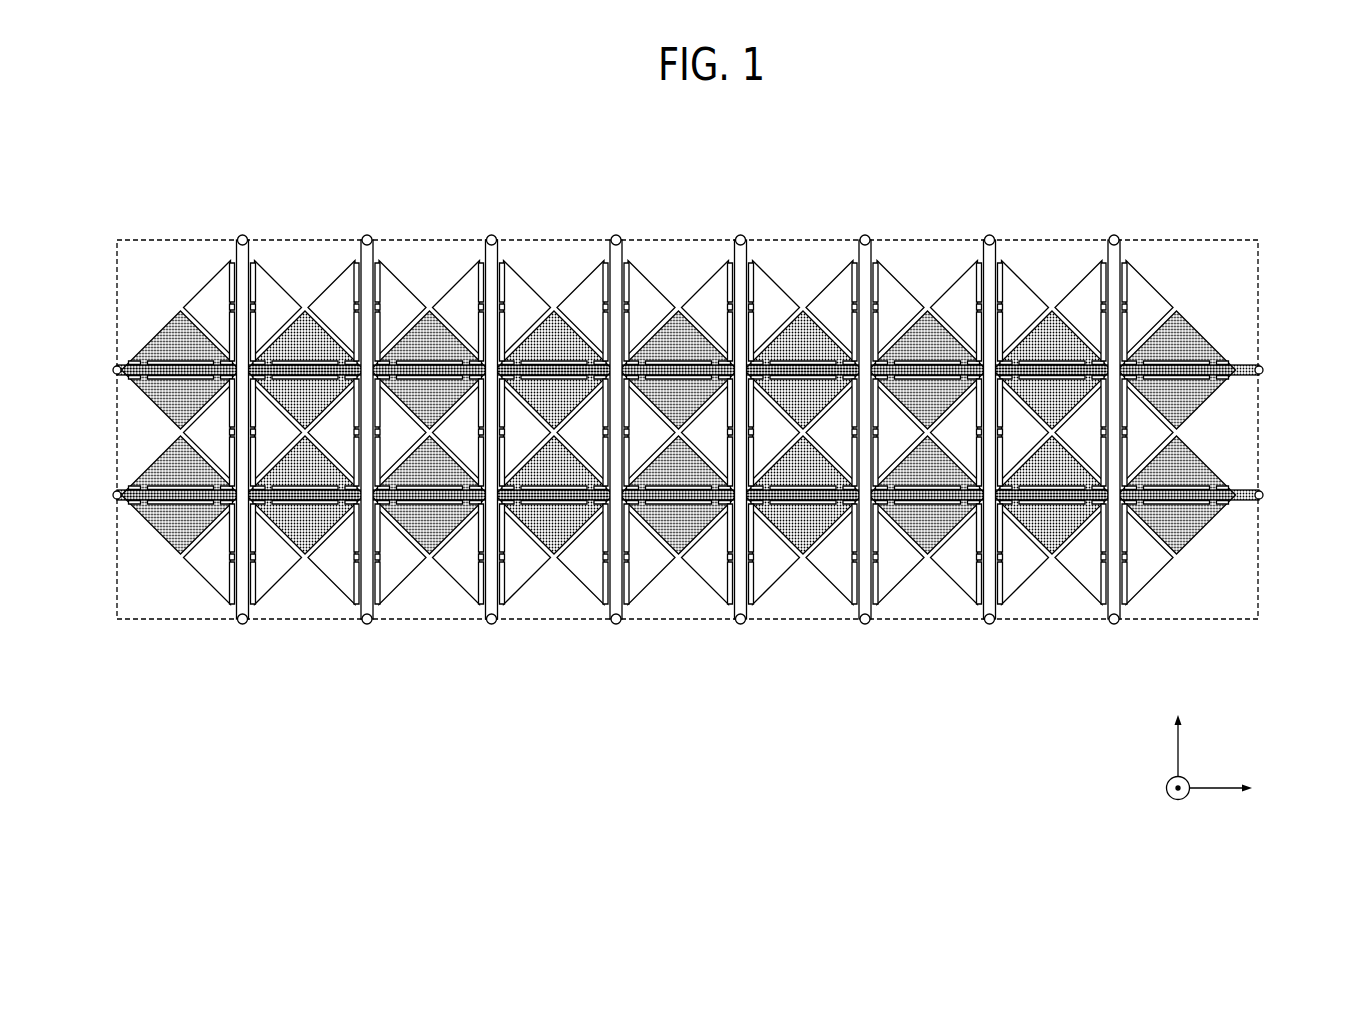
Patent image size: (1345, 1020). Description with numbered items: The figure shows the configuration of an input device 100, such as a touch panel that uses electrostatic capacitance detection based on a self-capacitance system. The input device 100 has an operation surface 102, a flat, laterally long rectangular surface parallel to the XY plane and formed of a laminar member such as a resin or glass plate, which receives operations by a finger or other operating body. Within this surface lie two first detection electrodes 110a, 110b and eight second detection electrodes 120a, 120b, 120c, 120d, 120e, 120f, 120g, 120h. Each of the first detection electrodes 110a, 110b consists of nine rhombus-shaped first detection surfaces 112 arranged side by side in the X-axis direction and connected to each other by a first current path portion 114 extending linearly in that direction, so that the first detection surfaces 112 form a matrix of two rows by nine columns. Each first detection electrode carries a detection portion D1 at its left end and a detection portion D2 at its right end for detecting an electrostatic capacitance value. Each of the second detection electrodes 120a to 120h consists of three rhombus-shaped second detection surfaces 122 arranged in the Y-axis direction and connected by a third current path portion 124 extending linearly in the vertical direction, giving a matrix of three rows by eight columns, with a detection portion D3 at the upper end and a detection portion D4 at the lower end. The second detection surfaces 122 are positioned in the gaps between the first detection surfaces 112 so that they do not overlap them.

The input device 100 is at (1255, 132).
The operation surface 102 is at (1248, 236).
The first detection electrode 110a is at (730, 334).
The first detection electrode 110b is at (730, 459).
The first detection surface 112 is at (724, 432).
The first current path portion 114 is at (727, 413).
The second detection electrode 120a is at (256, 532).
The second detection electrode 120b is at (380, 532).
The second detection electrode 120c is at (505, 532).
The second detection electrode 120d is at (629, 532).
The second detection electrode 120e is at (754, 532).
The second detection electrode 120f is at (878, 532).
The second detection electrode 120g is at (1003, 532).
The second detection electrode 120h is at (1127, 532).
The second detection surface 122 is at (704, 280).
The third current path portion 124 is at (702, 390).
The detection portion D1 is at (89, 430).
The detection portion D2 is at (1286, 431).
The detection portion D3 is at (681, 215).
The detection portion D4 is at (678, 645).